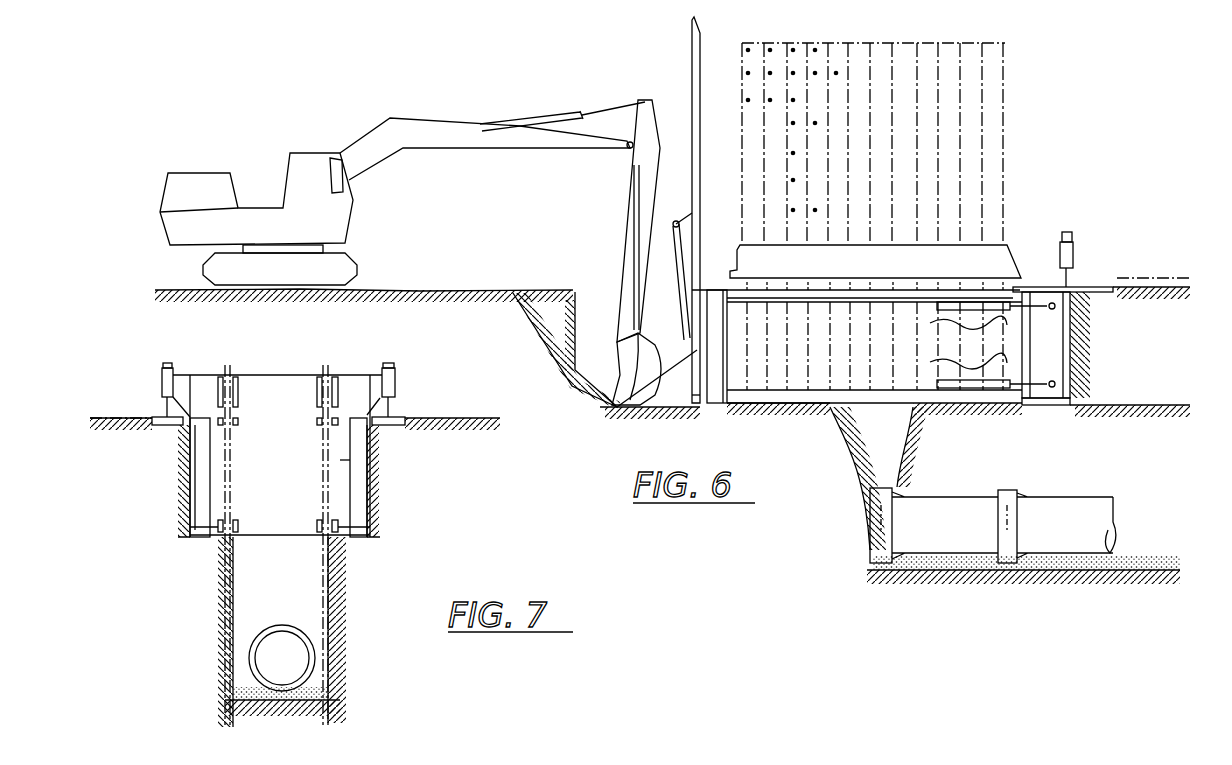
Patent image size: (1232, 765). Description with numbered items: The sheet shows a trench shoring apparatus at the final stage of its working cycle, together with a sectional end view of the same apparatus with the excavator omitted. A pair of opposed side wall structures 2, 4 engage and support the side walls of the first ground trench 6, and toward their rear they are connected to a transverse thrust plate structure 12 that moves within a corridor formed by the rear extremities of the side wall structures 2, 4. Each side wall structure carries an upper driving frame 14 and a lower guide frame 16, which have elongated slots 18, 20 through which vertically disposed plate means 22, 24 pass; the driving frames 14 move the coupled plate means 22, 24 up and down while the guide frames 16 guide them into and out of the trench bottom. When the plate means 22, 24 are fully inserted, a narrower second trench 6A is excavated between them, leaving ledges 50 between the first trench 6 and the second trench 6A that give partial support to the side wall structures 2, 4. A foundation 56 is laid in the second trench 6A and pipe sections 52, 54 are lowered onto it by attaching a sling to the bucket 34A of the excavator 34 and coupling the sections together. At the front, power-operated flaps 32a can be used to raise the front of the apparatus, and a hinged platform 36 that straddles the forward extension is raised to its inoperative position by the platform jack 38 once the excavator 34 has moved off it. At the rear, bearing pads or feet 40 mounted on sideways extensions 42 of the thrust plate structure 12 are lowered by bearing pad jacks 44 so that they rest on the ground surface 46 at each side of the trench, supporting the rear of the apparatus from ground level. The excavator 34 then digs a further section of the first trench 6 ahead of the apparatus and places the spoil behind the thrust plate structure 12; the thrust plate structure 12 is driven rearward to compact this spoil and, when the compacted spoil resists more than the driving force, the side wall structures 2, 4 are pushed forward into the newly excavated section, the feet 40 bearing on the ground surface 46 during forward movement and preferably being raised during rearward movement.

In FIG. 7, the side wall structure 2 is at (200, 495).
In FIG. 7, the side wall structure 4 is at (360, 497).
In FIG. 7, the ground trench 6 is at (380, 470).
In FIG. 7, the second trench 6A is at (342, 612).
In FIG. 6, the thrust plate structure 12 is at (1088, 344).
In FIG. 7, the thrust plate structure 12 is at (283, 375).
In FIG. 6, the driving frame 14 is at (1005, 263).
In FIG. 7, the driving frame 14 is at (223, 378).
In FIG. 6, the guide frame 16 is at (957, 405).
In FIG. 7, the guide frame 16 is at (218, 527).
In FIG. 7, the elongated slot 18 is at (236, 378).
In FIG. 7, the elongated slot 20 is at (271, 504).
In FIG. 7, the plate means 22 is at (350, 460).
In FIG. 6, the plate means 24 is at (955, 43).
In FIG. 7, the plate means 24 is at (195, 470).
In FIG. 6, the power-operated flaps 32a is at (700, 405).
In FIG. 6, the excavator 34 is at (317, 156).
In FIG. 6, the bucket 34A is at (645, 393).
In FIG. 6, the platform 36 is at (693, 68).
In FIG. 6, the platform jack 38 is at (682, 340).
In FIG. 6, the bearing pad 40 is at (1105, 288).
In FIG. 7, the bearing pad 40 is at (155, 428).
In FIG. 7, the sideways extension 42 is at (170, 370).
In FIG. 6, the bearing pad jack 44 is at (1073, 255).
In FIG. 7, the bearing pad jack 44 is at (162, 381).
In FIG. 6, the ground surface 46 is at (1160, 278).
In FIG. 7, the ground surface 46 is at (135, 420).
In FIG. 6, the ledge 50 is at (1155, 405).
In FIG. 7, the ledge 50 is at (233, 542).
In FIG. 6, the pipe section 52 is at (1092, 503).
In FIG. 7, the pipe section 52 is at (315, 658).
In FIG. 6, the pipe section 54 is at (982, 503).
In FIG. 6, the foundation 56 is at (982, 566).
In FIG. 7, the foundation 56 is at (240, 696).